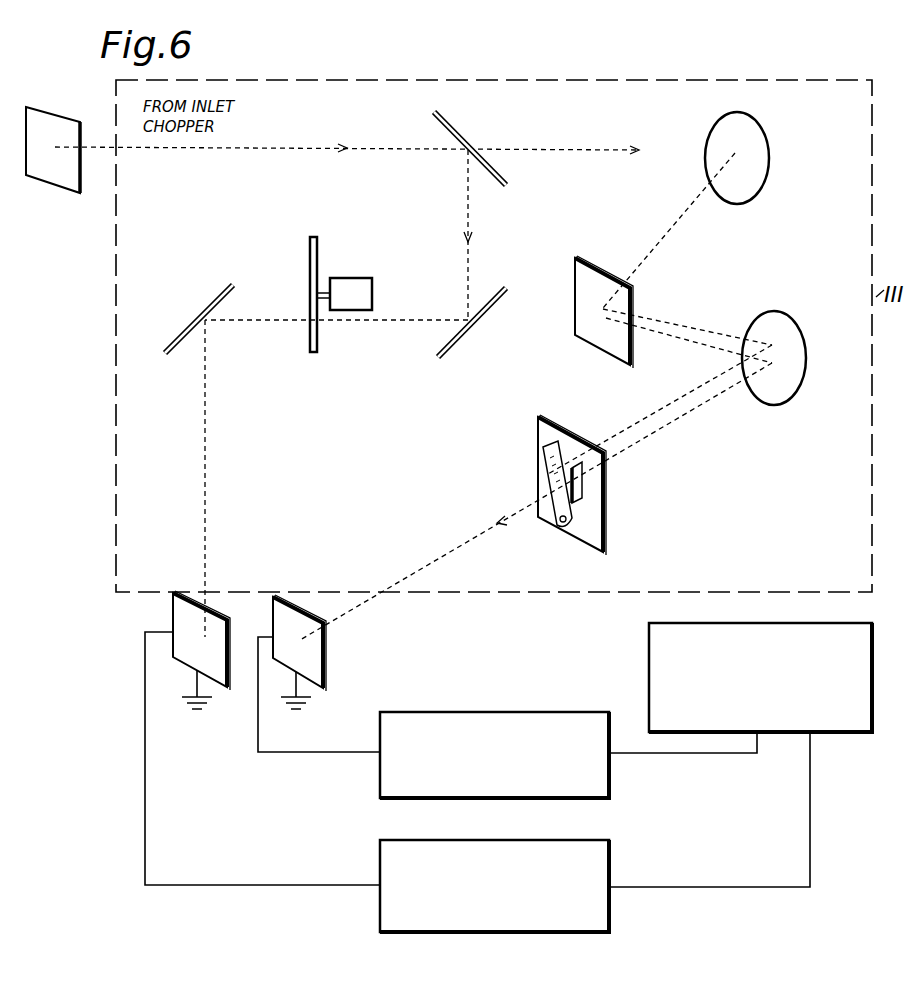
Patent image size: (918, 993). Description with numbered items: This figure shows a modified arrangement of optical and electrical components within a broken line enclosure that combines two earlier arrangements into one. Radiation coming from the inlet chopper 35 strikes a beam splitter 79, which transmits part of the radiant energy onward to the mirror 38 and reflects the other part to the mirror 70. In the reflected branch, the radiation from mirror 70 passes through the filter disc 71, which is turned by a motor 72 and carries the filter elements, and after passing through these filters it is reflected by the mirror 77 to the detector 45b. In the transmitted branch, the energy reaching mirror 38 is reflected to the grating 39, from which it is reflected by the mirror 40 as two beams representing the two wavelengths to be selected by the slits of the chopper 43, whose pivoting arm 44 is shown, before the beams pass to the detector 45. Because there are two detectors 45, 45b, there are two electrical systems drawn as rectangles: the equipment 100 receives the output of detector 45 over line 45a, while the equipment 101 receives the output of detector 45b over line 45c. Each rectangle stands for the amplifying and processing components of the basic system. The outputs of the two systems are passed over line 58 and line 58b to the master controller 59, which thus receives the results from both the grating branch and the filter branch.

The inlet chopper 35 is at (50, 108).
The mirror 38 is at (768, 155).
The grating 39 is at (597, 270).
The mirror 40 is at (782, 396).
The chopper 43 is at (608, 512).
The pivoting arm 44 is at (550, 517).
The detector 45 is at (327, 652).
The line 45a is at (334, 754).
The detector 45b is at (172, 613).
The line 45c is at (330, 883).
The line 58 is at (720, 758).
The line 58b is at (738, 862).
The master controller 59 is at (648, 644).
The mirror 70 is at (492, 311).
The filter disc 71 is at (318, 262).
The chopper motor 72 is at (361, 278).
The mirror 77 is at (209, 300).
The beam splitter 79 is at (462, 128).
The electrical system 100 is at (522, 710).
The electrical system 101 is at (530, 838).